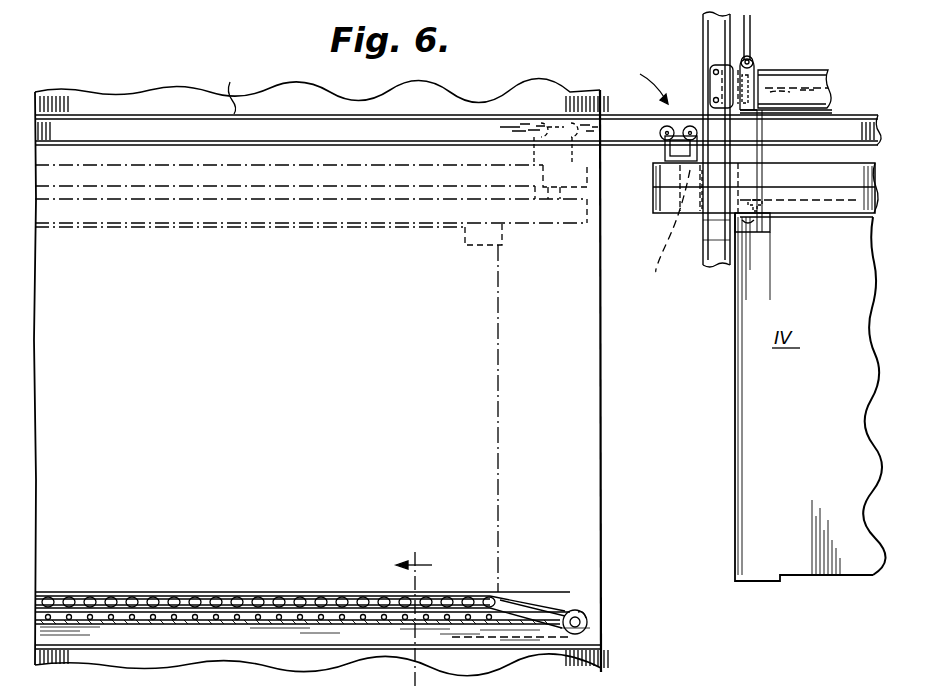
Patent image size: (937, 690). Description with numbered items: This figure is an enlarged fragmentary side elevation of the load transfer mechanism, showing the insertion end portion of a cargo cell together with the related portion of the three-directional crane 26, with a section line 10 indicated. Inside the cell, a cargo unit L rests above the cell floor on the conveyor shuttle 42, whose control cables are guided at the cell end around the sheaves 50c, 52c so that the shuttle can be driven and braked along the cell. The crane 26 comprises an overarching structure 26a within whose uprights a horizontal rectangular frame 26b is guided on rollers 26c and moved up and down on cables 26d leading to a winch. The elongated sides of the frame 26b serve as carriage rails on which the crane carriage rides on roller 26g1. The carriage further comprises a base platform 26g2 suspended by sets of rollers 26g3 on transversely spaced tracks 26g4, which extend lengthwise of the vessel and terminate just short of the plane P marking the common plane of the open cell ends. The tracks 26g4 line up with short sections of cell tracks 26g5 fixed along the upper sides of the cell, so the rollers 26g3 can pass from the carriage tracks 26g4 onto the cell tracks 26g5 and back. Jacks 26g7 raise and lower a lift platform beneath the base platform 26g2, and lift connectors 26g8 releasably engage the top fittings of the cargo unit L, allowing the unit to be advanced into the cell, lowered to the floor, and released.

The section line 10 is at (422, 618).
The conveyor shuttle 42 is at (226, 592).
The sheave 50c is at (590, 614).
The sheave 52c is at (590, 616).
The three-directional crane 26 is at (641, 83).
The overarching structure 26a is at (703, 36).
The horizontal rectangular frame 26b is at (782, 64).
The rollers 26c is at (712, 68).
The cables 26d is at (748, 24).
The roller 26g1 is at (832, 88).
The base platform 26g2 is at (650, 170).
The rollers 26g3 is at (664, 126).
The tracks 26g4 is at (614, 146).
The cell tracks 26g5 is at (215, 88).
The jacks 26g7 is at (671, 234).
The lift connectors 26g8 is at (776, 236).
The cargo unit L is at (500, 430).
The plane P is at (600, 40).